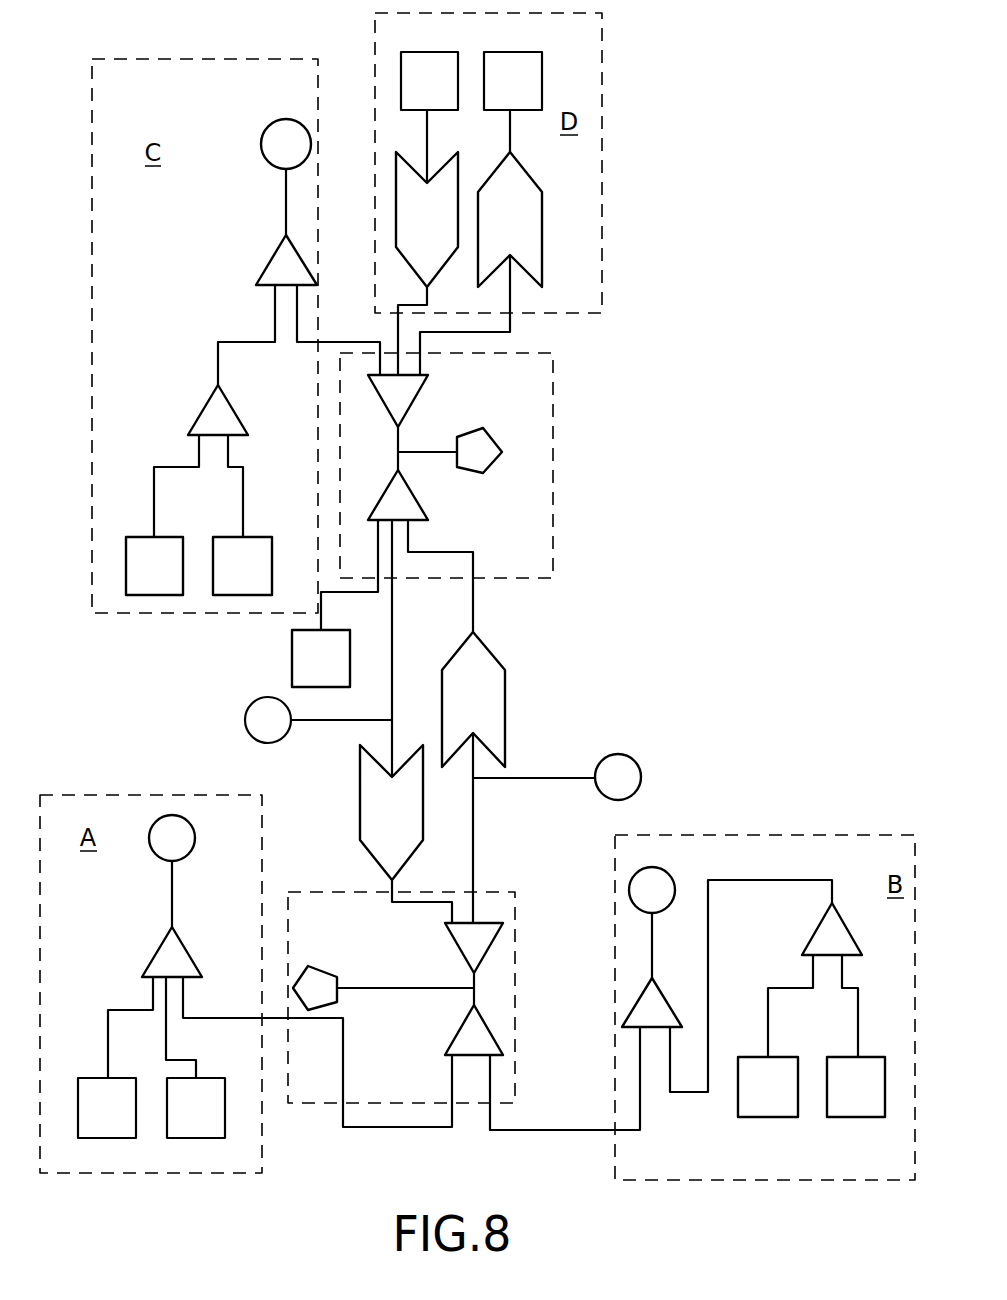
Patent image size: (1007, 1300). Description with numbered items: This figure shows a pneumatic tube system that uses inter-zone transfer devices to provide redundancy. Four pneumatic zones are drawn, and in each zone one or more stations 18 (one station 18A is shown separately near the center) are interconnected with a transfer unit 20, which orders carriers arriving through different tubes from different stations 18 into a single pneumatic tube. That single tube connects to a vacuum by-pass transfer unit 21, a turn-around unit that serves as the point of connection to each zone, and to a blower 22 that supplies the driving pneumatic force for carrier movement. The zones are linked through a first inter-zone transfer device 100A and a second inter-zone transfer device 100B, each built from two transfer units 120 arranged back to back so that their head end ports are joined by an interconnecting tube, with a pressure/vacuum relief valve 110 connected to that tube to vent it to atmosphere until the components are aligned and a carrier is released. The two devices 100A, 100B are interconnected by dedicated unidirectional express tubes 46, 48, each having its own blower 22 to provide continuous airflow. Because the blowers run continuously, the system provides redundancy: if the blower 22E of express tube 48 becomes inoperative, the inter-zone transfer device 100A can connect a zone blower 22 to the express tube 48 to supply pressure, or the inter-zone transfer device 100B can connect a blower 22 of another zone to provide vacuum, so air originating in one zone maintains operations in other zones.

The station 18 is at (505, 827).
The station 18A is at (321, 658).
The transfer unit 20 is at (208, 412).
The vacuum by-pass transfer unit 21 is at (270, 262).
The blower 22 is at (261, 139).
The blower 22E is at (636, 760).
The express tube 46 is at (393, 609).
The express tube 48 is at (475, 600).
The inter-zone transfer device 100A is at (553, 413).
The inter-zone transfer device 100B is at (515, 978).
The pressure/vacuum relief valve 110 is at (478, 473).
The transfer unit 120 is at (420, 380).